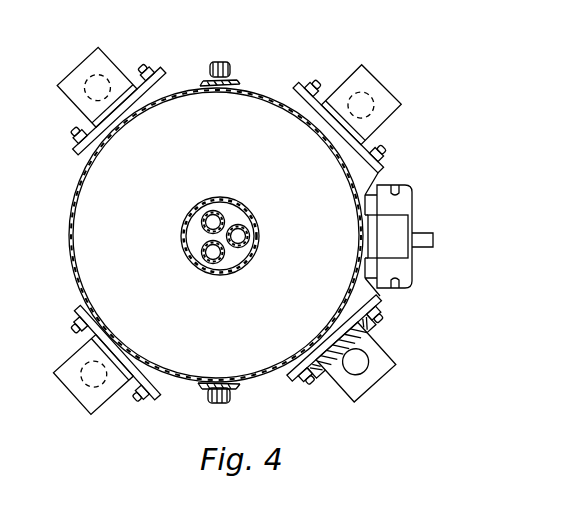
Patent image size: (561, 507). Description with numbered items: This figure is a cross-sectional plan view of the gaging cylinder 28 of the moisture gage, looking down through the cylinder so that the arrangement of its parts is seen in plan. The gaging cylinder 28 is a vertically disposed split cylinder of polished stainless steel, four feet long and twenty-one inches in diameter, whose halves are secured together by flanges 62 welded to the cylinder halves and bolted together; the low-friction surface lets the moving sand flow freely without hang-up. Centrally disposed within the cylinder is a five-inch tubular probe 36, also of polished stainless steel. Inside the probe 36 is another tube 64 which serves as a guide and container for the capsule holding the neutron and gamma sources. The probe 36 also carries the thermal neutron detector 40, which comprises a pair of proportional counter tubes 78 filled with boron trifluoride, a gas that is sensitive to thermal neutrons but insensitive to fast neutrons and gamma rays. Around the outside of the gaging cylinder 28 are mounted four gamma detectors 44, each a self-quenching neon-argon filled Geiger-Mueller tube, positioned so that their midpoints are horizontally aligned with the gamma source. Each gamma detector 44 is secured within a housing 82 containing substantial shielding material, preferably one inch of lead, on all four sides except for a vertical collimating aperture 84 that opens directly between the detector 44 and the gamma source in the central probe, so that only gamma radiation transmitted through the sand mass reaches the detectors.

The gaging cylinder 28 is at (76, 197).
The tubular probe 36 is at (252, 212).
The thermal neutron detector 40 is at (200, 245).
The gamma detectors 44 is at (110, 80).
The flanges 62 is at (211, 402).
The tube 64 is at (241, 246).
The proportional counter tubes 78 is at (186, 232).
The housing 82 is at (89, 64).
The vertical collimating aperture 84 is at (346, 339).